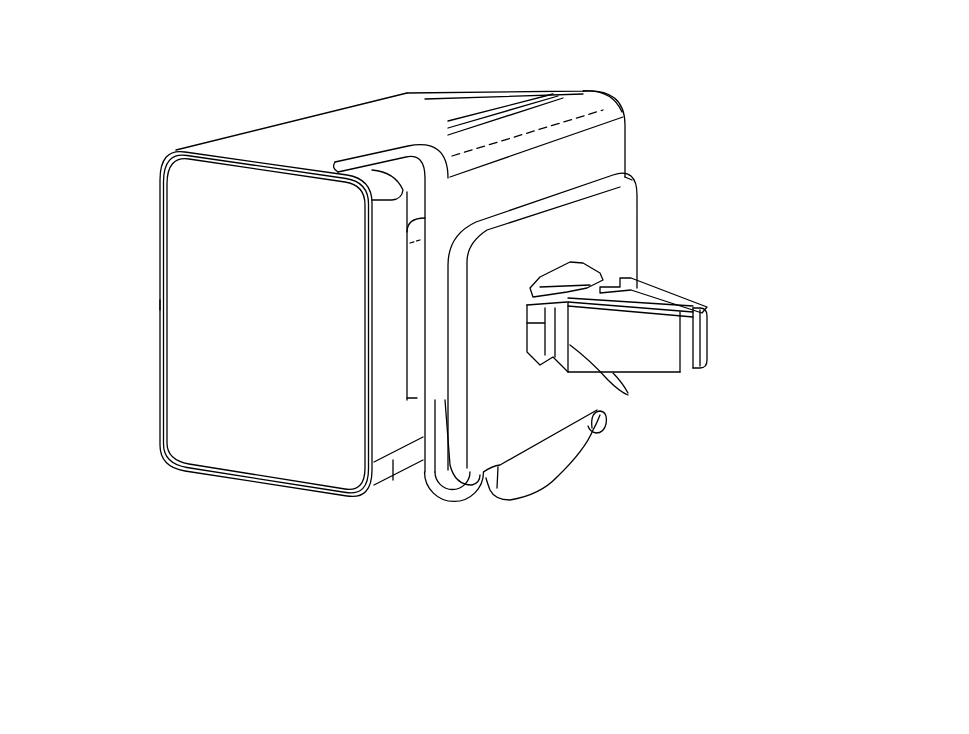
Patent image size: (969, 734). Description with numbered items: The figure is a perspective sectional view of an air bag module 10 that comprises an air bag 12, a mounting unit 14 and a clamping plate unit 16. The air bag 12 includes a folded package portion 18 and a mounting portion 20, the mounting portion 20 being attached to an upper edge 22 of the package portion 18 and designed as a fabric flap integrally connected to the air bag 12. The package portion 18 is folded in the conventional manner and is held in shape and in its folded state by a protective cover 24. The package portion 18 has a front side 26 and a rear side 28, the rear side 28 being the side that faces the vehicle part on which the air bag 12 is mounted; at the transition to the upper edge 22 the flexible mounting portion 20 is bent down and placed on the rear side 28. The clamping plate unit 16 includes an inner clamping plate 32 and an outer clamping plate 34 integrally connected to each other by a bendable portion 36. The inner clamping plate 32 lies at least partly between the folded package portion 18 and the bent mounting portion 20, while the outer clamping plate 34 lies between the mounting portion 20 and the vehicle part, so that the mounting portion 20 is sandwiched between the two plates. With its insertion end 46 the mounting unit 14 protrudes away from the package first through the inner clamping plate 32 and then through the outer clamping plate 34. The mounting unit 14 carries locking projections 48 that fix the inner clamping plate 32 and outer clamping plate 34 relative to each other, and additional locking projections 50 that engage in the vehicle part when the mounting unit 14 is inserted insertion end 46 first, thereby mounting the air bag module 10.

The air bag module 10 is at (694, 78).
The air bag 12 is at (247, 123).
The mounting unit 14 is at (670, 352).
The clamping plate unit 16 is at (403, 520).
The folded package portion 18 is at (190, 390).
The mounting portion 20 is at (617, 147).
The upper edge 22 is at (598, 95).
The protective cover 24 is at (369, 122).
The front side 26 is at (137, 271).
The rear side 28 is at (658, 211).
The inner clamping plate 32 is at (417, 398).
The outer clamping plate 34 is at (510, 427).
The bendable portion 36 is at (450, 506).
The insertion end 46 is at (700, 334).
The locking projections 48 is at (603, 306).
The additional locking projections 50 is at (628, 394).